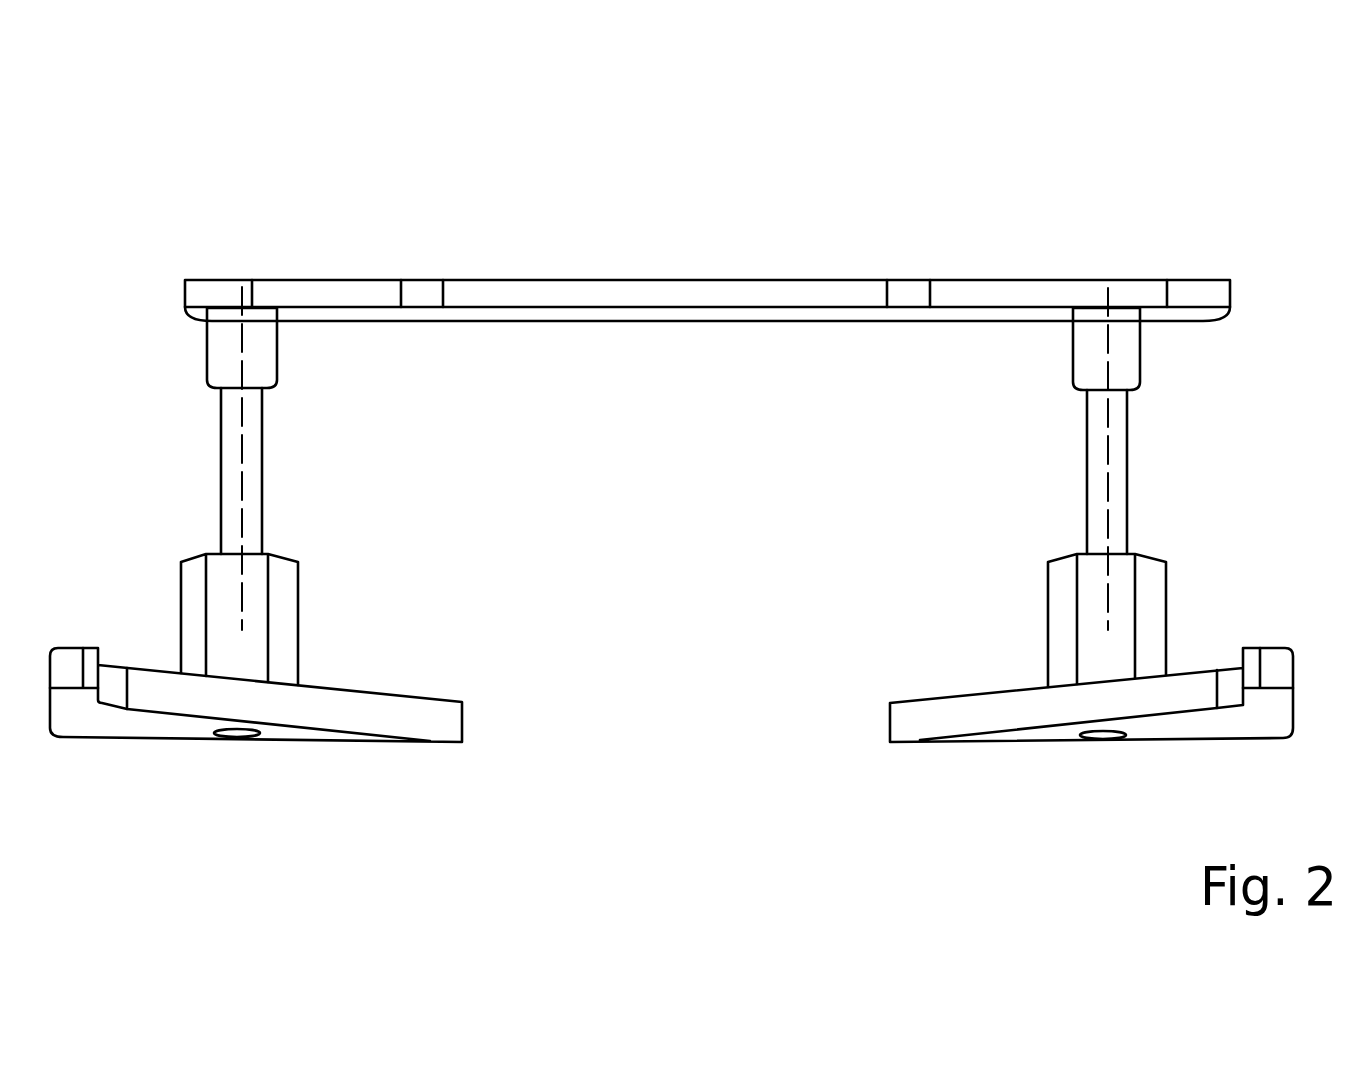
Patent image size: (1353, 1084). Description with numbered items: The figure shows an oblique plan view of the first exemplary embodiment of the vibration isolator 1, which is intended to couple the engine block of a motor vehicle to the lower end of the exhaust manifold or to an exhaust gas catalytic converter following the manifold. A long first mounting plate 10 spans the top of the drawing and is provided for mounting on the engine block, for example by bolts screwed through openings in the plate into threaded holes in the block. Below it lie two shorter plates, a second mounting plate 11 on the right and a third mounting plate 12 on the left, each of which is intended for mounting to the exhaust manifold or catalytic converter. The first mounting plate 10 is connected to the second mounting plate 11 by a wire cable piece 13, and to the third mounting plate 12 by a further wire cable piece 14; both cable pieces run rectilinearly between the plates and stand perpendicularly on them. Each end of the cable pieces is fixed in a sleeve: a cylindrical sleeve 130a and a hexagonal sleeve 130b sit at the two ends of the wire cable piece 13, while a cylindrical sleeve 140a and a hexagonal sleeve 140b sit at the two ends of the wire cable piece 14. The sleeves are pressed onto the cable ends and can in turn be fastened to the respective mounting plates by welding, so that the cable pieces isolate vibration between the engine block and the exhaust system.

The vibration isolator 1 is at (691, 398).
The first mounting plate 10 is at (687, 297).
The second mounting plate 11 is at (1188, 692).
The third mounting plate 12 is at (330, 712).
The wire cable piece 13 is at (1111, 515).
The further wire cable piece 14 is at (256, 514).
The cylindrical sleeve 130a is at (1083, 345).
The hexagonal sleeve 130b is at (1053, 610).
The cylindrical sleeve 140a is at (263, 355).
The hexagonal sleeve 140b is at (280, 580).